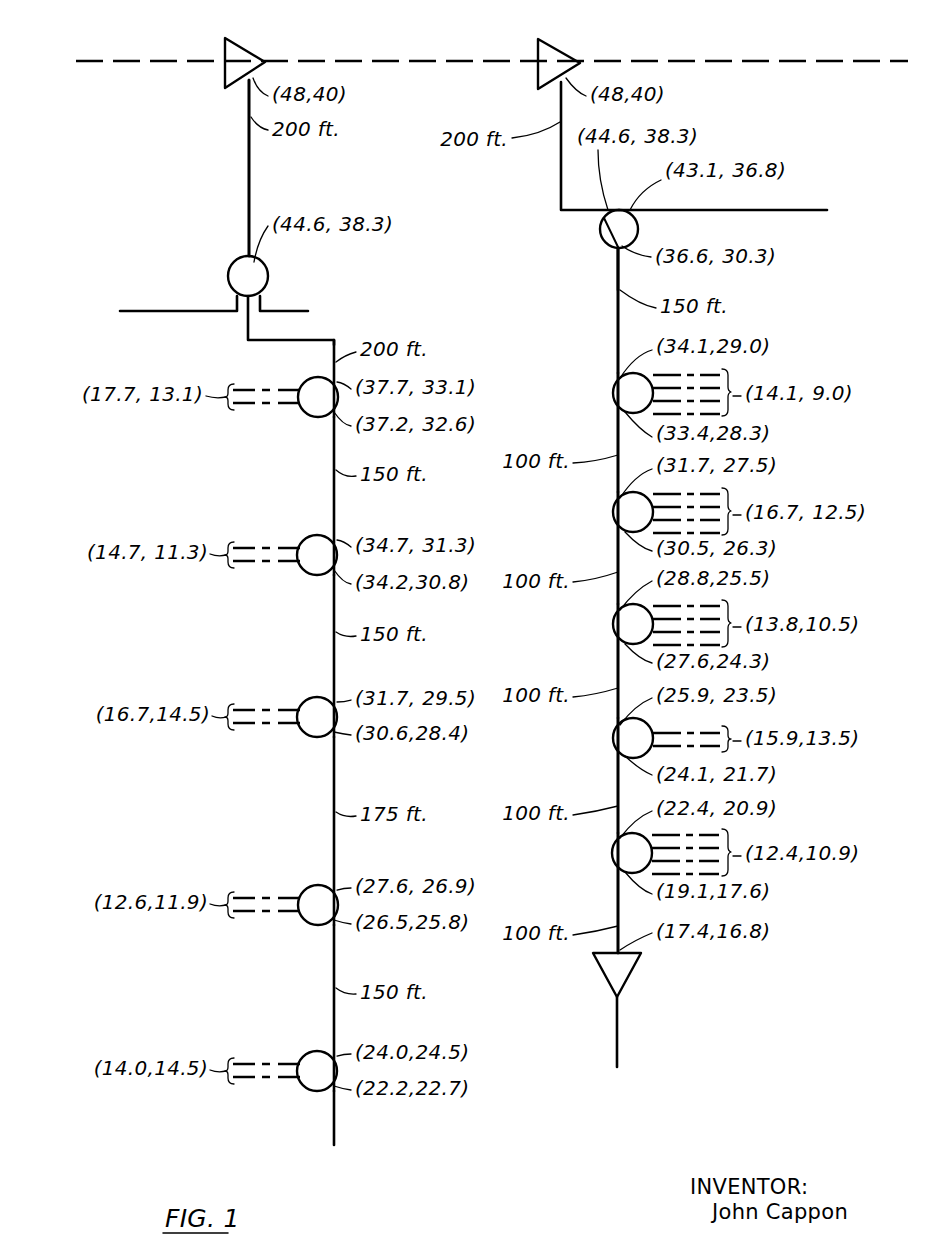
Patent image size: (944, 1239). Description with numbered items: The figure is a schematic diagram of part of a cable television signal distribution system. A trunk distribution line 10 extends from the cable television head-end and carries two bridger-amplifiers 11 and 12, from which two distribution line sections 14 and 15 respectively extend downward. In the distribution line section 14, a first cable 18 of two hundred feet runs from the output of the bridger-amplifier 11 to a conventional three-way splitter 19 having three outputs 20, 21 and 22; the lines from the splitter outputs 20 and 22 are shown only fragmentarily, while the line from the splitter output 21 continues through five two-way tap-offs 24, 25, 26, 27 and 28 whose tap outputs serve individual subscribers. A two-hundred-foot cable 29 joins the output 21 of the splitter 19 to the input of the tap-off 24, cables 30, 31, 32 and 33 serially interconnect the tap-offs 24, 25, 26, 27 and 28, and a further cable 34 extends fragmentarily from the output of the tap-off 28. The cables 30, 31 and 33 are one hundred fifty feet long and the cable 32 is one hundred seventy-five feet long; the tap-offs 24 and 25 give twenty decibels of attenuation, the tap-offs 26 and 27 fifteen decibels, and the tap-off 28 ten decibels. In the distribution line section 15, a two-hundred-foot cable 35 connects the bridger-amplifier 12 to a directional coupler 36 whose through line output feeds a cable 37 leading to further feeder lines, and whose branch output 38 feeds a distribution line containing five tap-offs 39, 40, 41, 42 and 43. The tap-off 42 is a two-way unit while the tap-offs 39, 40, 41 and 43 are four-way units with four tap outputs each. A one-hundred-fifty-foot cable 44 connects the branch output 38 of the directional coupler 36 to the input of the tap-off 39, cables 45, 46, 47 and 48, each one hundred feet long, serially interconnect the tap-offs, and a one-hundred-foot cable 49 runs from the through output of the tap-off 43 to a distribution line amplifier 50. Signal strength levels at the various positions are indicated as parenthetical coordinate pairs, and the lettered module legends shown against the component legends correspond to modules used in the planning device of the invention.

The trunk distribution line 10 is at (331, 59).
The bridger-amplifier 11 is at (250, 46).
The bridger-amplifier 12 is at (553, 42).
The distribution line section 14 is at (248, 152).
The distribution line section 15 is at (752, 310).
The first cable 18 is at (247, 190).
The three-way splitter 19 is at (242, 276).
The splitter output 20 is at (236, 302).
The splitter output 21 is at (247, 305).
The splitter output 22 is at (259, 302).
The two-way tap-off 24 is at (312, 405).
The two-way tap-off 25 is at (312, 563).
The two-way tap-off 26 is at (312, 725).
The two-way tap-off 27 is at (312, 913).
The two-way tap-off 28 is at (312, 1079).
The cable 29 is at (312, 340).
The cable 30 is at (333, 496).
The cable 31 is at (333, 630).
The cable 32 is at (333, 854).
The cable 33 is at (333, 1020).
The cable 34 is at (333, 1133).
The cable 35 is at (560, 168).
The directional coupler 36 is at (600, 231).
The cable 37 is at (768, 210).
The branch output 38 is at (614, 248).
The four-way tap-off 39 is at (627, 396).
The four-way tap-off 40 is at (627, 515).
The four-way tap-off 41 is at (627, 627).
The two-way tap-off 42 is at (627, 743).
The four-way tap-off 43 is at (627, 853).
The cable 44 is at (618, 312).
The cable 45 is at (618, 440).
The cable 46 is at (618, 545).
The cable 47 is at (618, 660).
The cable 48 is at (618, 787).
The cable 49 is at (618, 900).
The distribution line amplifier 50 is at (605, 970).